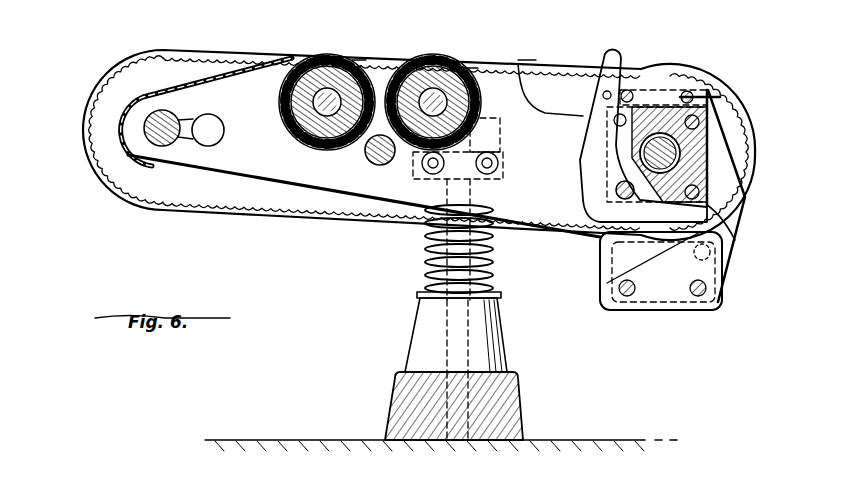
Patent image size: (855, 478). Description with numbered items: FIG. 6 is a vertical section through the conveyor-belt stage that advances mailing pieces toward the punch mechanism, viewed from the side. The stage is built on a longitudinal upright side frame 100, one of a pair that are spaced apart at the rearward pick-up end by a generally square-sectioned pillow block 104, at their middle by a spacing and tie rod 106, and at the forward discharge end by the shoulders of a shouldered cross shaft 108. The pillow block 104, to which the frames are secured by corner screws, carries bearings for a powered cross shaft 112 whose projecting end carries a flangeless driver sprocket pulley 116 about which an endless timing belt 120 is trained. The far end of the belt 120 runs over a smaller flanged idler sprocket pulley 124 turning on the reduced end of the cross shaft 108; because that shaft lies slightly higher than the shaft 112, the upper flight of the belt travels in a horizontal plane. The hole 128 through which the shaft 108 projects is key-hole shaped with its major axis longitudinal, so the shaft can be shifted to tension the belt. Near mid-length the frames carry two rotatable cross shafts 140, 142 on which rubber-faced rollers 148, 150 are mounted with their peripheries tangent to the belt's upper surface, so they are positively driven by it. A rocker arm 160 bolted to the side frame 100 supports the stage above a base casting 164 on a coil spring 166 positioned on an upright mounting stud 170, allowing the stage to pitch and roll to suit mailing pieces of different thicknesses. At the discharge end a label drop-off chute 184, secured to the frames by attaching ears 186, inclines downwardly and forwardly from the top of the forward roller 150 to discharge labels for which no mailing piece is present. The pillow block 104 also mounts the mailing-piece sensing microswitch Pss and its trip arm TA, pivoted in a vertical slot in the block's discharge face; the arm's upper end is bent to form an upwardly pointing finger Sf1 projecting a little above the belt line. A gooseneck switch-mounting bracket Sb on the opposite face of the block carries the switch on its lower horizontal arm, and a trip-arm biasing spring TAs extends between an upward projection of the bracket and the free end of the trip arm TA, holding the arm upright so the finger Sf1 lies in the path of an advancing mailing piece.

The side frame 100 is at (540, 48).
The pillow block 104 is at (682, 148).
The spacing and tie rod 106 is at (370, 157).
The shouldered cross shaft 108 is at (145, 143).
The powered cross shaft 112 is at (707, 170).
The driver sprocket pulley 116 is at (657, 78).
The timing belt 120 is at (527, 60).
The idler sprocket pulley 124 is at (112, 92).
The hole 128 is at (190, 140).
The cross shaft 140 is at (447, 55).
The cross shaft 142 is at (323, 55).
The rubber-faced roller 148 is at (470, 67).
The rubber-faced roller 150 is at (370, 44).
The rocker arm 160 is at (413, 168).
The base casting 164 is at (505, 407).
The coil spring 166 is at (426, 262).
The mounting stud 170 is at (418, 294).
The label drop-off chute 184 is at (223, 73).
The attaching ear 186 is at (258, 75).
The upwardly pointing finger Sf1 is at (633, 32).
The trip-arm biasing spring TAs is at (673, 90).
The trip arm TA is at (588, 170).
The switch-mounting bracket Sb is at (730, 227).
The mailing-piece sensing switch Pss is at (603, 262).